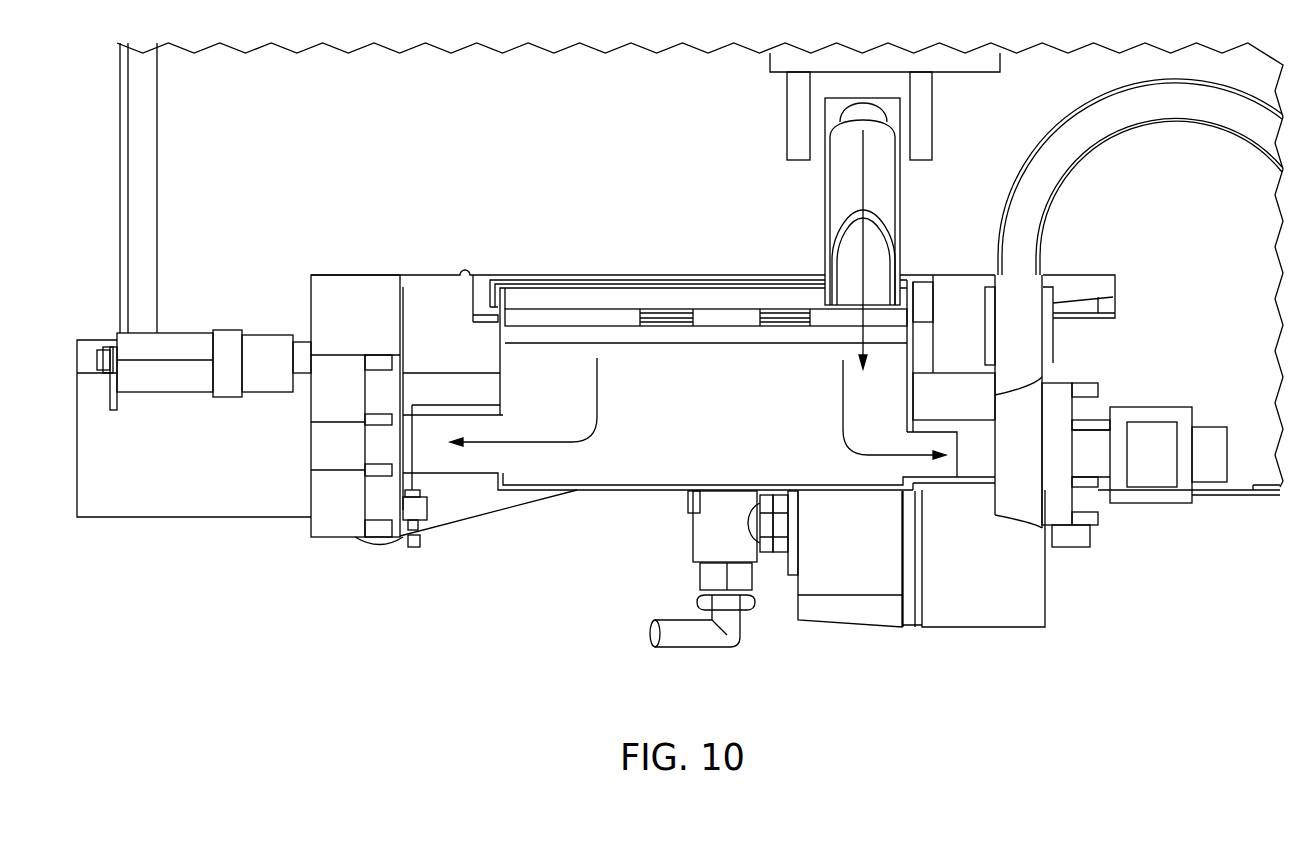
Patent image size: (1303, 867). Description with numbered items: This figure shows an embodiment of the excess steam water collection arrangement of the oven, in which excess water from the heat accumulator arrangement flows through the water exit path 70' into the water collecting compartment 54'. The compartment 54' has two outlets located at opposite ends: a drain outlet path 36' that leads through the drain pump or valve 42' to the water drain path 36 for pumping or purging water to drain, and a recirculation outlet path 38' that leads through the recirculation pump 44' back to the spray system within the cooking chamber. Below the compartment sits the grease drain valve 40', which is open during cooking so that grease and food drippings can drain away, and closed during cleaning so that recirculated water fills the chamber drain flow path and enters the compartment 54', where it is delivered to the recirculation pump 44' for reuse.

The water drain path 36 is at (1138, 177).
The water exit path 70' is at (891, 233).
The water collecting compartment 54' is at (706, 299).
The recirculation outlet path 38' is at (559, 402).
The drain outlet path 36' is at (858, 409).
The recirculation pump 44' is at (194, 449).
The grease drain valve 40' is at (711, 569).
The drain pump or valve 42' is at (998, 418).